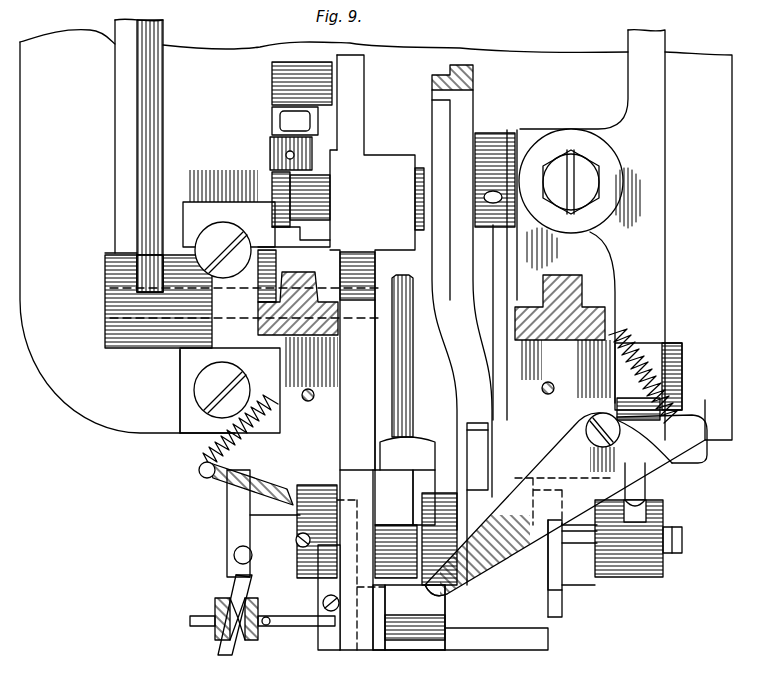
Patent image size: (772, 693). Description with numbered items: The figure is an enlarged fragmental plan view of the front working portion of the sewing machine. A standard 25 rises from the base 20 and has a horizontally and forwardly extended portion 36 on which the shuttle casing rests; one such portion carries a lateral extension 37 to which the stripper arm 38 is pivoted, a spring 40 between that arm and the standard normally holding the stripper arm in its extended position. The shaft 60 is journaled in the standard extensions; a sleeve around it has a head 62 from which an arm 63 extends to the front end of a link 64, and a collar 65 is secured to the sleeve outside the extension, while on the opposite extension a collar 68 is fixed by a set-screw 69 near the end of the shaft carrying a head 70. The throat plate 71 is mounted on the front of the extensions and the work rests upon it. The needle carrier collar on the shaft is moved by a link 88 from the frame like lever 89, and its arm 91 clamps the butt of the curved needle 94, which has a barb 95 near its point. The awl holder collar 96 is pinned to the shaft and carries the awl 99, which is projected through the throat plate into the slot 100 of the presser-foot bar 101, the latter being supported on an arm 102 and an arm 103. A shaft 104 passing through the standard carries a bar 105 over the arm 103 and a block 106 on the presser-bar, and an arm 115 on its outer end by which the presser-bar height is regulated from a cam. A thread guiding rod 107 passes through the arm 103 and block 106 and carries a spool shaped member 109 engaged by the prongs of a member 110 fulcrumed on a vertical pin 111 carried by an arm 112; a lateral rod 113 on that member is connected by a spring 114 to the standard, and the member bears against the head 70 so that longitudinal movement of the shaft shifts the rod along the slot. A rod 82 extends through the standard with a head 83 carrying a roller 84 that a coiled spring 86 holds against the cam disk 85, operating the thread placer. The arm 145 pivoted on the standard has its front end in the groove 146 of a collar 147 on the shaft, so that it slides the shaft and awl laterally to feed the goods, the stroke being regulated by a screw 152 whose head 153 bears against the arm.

The base 20 is at (107, 410).
The standard 25 is at (300, 273).
The horizontally and forwardly extended portion 36 is at (398, 404).
The lateral extension 37 is at (698, 446).
The stripper arm 38 is at (562, 595).
The spring 40 is at (632, 350).
The shaft 60 is at (585, 560).
The head 62 is at (534, 522).
The arm 63 is at (478, 447).
The link 64 is at (470, 380).
The collar 65 is at (556, 578).
The collar 68 is at (305, 553).
The set-screw 69 is at (250, 518).
The head 70 is at (236, 553).
The throat plate 71 is at (490, 645).
The rod 82 is at (322, 476).
The head 83 is at (270, 150).
The roller 84 is at (272, 117).
The cam disk 85 is at (272, 78).
The coiled spring 86 is at (272, 192).
The link 88 is at (392, 356).
The frame like lever 89 is at (360, 96).
The arm 91 is at (394, 493).
The curved needle 94 is at (413, 496).
The barb 95 is at (412, 551).
The collar 96 is at (447, 593).
The awl 99 is at (427, 437).
The slot 100 is at (420, 638).
The presser-foot bar 101 is at (447, 630).
The arm 102 is at (550, 618).
The arm 103 is at (330, 640).
The shaft 104 is at (114, 307).
The bar 105 is at (382, 388).
The block 106 is at (378, 620).
The thread guiding rod 107 is at (292, 627).
The spool shaped member 109 is at (230, 640).
The member 110 is at (230, 578).
The vertical pin 111 is at (238, 558).
The arm 112 is at (233, 506).
The rod 113 is at (225, 478).
The spring 114 is at (213, 450).
The arm 115 is at (116, 130).
The arm 145 is at (655, 150).
The groove 146 is at (668, 533).
The collar 147 is at (655, 568).
The screw 152 is at (606, 368).
The head 153 is at (683, 365).